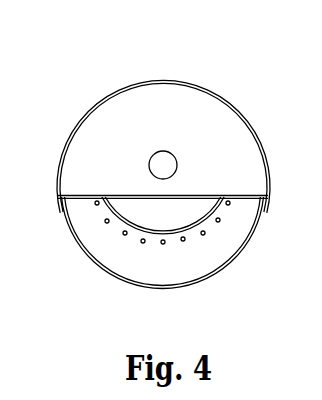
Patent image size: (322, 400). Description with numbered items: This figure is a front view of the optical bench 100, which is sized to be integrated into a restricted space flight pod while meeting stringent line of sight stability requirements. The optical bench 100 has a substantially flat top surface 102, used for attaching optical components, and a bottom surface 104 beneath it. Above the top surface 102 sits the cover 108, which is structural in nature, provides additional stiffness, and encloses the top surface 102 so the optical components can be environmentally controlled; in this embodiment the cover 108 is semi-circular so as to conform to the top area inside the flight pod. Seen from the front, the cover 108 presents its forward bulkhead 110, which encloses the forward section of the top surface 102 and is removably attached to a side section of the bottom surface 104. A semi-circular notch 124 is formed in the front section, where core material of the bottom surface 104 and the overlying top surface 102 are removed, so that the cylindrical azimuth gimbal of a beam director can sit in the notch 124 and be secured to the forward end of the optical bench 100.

The optical bench 100 is at (161, 179).
The top surface 102 is at (112, 195).
The bottom surface 104 is at (106, 277).
The cover 108 is at (156, 179).
The forward bulkhead 110 is at (188, 78).
The notch 124 is at (195, 212).